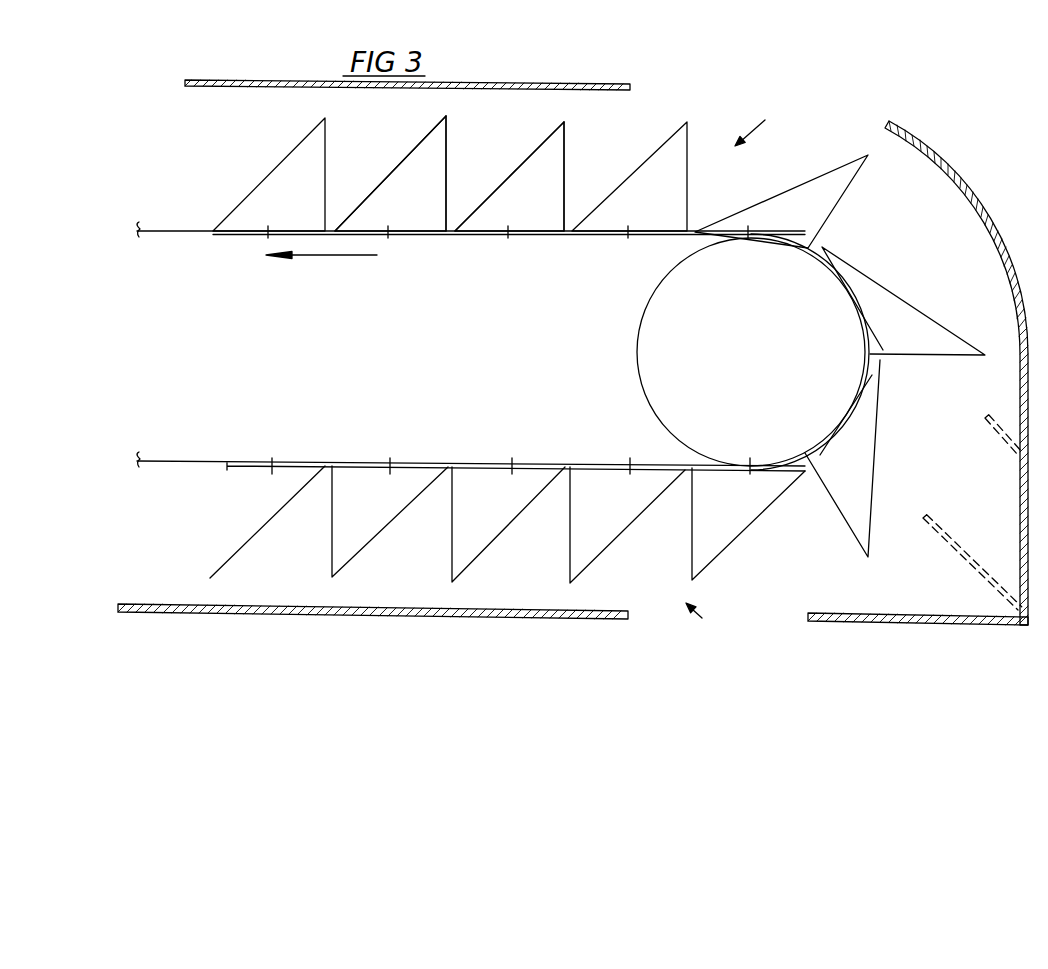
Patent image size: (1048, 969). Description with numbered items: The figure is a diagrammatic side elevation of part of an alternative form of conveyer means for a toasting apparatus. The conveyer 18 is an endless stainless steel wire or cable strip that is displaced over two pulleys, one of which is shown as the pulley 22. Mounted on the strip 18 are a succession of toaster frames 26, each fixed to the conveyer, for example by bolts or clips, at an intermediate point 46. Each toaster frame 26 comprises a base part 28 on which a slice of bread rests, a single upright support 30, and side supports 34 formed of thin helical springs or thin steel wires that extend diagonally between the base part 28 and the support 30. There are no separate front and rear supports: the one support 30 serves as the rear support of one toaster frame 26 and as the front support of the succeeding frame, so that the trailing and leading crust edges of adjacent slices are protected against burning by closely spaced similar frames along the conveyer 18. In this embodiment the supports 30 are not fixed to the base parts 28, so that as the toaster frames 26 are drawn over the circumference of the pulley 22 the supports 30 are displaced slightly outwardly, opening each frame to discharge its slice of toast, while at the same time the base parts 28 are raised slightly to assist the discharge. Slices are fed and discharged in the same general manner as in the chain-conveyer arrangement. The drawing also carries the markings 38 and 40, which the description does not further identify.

The endless conveyer 18 is at (470, 235).
The pulley 22 is at (662, 400).
The toaster frame 26 is at (411, 134).
The base part 28 is at (351, 231).
The upright rear support plate 30 is at (446, 180).
The side supports 34 is at (392, 170).
The direction of material discharge 38 is at (761, 120).
The return run region 40 is at (703, 624).
The intermediate point 46 is at (392, 240).